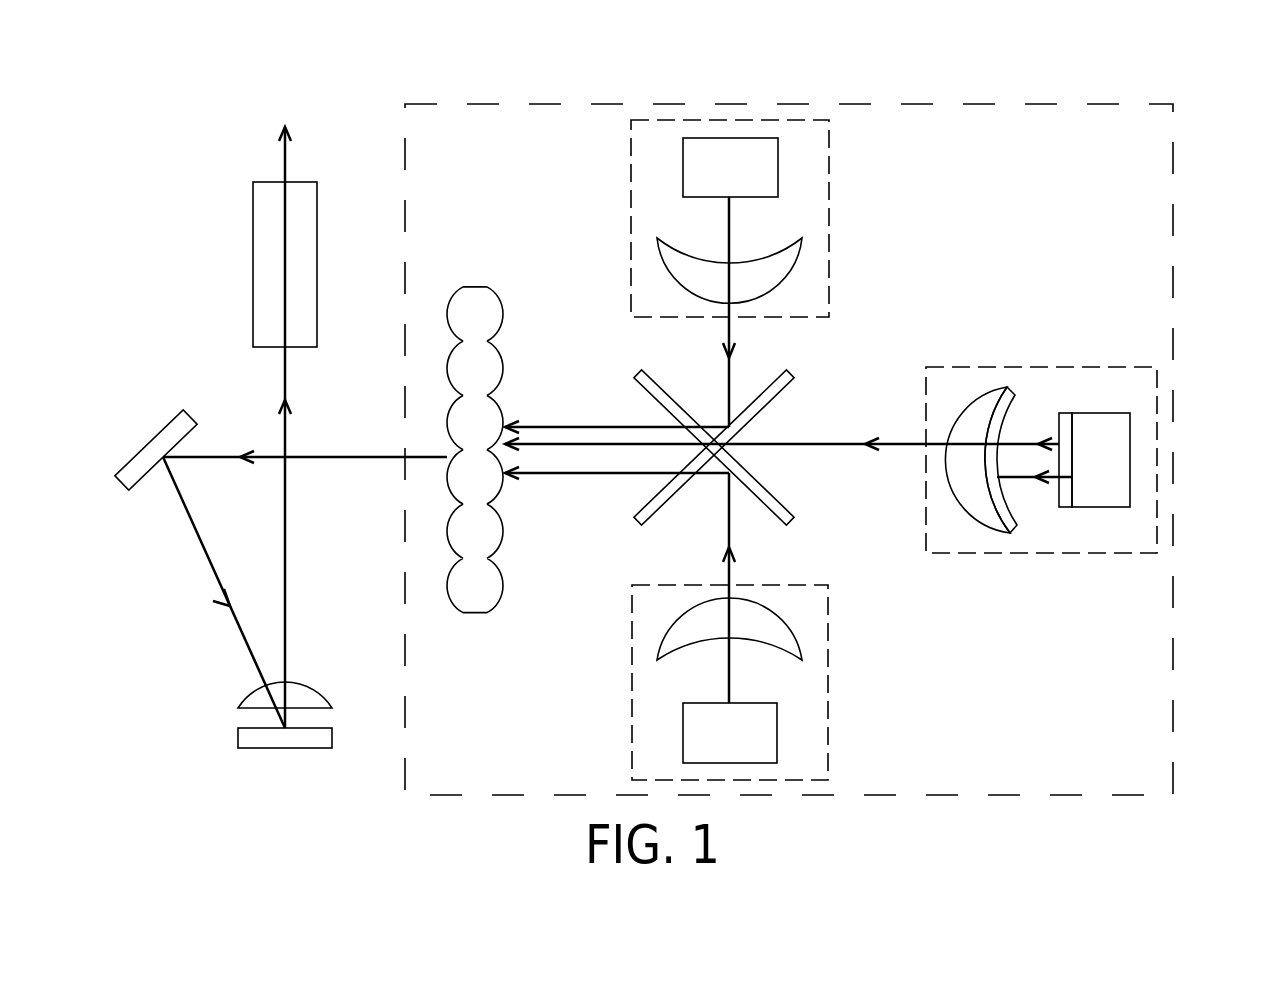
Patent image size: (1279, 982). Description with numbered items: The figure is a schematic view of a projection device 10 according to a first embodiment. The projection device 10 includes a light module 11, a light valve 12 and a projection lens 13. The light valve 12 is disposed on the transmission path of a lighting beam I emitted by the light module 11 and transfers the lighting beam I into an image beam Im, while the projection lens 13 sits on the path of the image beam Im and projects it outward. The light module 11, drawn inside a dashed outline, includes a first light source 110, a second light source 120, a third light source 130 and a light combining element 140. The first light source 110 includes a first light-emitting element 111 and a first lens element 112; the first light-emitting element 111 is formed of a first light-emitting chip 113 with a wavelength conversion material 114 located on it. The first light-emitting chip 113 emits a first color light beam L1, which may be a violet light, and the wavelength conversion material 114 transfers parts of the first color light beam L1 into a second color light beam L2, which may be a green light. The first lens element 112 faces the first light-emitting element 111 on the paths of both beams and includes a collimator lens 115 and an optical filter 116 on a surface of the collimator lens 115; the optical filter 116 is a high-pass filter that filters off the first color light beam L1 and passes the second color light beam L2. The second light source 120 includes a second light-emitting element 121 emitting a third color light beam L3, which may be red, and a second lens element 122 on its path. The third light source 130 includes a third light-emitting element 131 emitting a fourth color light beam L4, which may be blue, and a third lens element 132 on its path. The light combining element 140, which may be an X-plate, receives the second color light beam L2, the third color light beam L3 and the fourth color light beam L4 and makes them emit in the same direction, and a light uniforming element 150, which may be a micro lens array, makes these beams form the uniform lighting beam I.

The projection device 10 is at (1247, 93).
The light module 11 is at (1174, 170).
The light valve 12 is at (238, 742).
The projection lens 13 is at (253, 267).
The first light source 110 is at (995, 450).
The first light-emitting element 111 is at (1078, 542).
The first lens element 112 is at (980, 381).
The first light-emitting chip 113 is at (1110, 507).
The wavelength conversion material 114 is at (1063, 507).
The collimator lens 115 is at (962, 405).
The optical filter 116 is at (1012, 392).
The second light source 120 is at (741, 273).
The second light-emitting element 121 is at (683, 166).
The second lens element 122 is at (657, 263).
The third light source 130 is at (744, 626).
The third light-emitting element 131 is at (683, 740).
The third lens element 132 is at (657, 640).
The light combining element 140 is at (780, 500).
The light uniforming element 150 is at (472, 614).
The first color light beam L1 is at (869, 527).
The second color light beam L2 is at (1018, 445).
The third color light beam L3 is at (730, 222).
The fourth color light beam L4 is at (730, 676).
The lighting beam I is at (363, 460).
The image beam Im is at (287, 585).